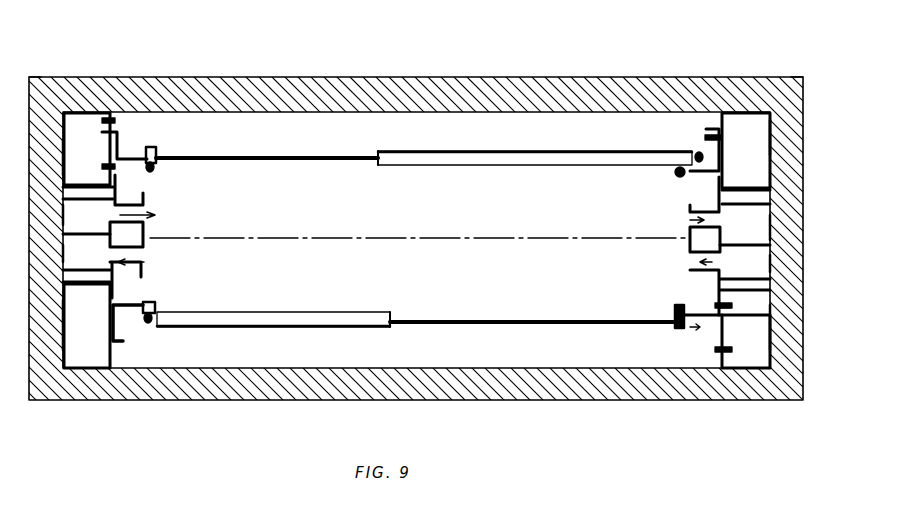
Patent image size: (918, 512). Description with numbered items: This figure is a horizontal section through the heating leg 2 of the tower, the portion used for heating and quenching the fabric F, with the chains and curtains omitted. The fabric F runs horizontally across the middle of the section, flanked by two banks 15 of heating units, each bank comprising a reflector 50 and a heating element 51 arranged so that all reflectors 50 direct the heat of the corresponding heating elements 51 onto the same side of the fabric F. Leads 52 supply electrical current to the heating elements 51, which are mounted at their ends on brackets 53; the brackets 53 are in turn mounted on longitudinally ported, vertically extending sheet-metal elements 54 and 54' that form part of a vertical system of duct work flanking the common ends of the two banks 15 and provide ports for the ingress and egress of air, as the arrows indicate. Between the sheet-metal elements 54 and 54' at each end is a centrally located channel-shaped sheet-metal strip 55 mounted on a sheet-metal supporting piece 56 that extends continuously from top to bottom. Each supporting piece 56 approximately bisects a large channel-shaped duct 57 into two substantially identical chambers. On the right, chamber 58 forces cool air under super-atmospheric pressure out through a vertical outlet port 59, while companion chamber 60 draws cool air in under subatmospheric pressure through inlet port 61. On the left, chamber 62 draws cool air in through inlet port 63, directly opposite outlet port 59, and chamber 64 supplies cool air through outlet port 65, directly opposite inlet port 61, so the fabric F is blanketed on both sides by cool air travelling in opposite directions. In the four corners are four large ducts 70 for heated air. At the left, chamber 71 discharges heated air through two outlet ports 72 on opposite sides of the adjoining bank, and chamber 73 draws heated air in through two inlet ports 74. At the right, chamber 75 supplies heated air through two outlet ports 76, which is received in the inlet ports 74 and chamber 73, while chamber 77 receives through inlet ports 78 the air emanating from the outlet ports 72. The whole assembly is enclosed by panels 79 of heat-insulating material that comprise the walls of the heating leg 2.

The heating leg 2 is at (30, 72).
The bank 15 is at (383, 150).
The reflector 50 is at (573, 151).
The heating element 51 is at (298, 155).
The lead 52 is at (150, 152).
The bracket 53 is at (150, 170).
The sheet metal element 54 is at (416, 240).
The sheet metal element 54' is at (414, 236).
The channel-shaped sheet-metal strip 55 is at (146, 246).
The sheet-metal supporting piece 56 is at (88, 238).
The duct 57 is at (63, 219).
The chamber 58 is at (772, 281).
The outlet port 59 is at (698, 263).
The chamber 60 is at (772, 205).
The inlet port 61 is at (690, 212).
The chamber 62 is at (68, 265).
The inlet port 63 is at (145, 263).
The chamber 64 is at (72, 191).
The outlet port 65 is at (156, 212).
The duct 70 is at (62, 157).
The chamber 71 is at (84, 356).
The outlet port 72 is at (130, 302).
The chamber 73 is at (68, 128).
The inlet port 74 is at (118, 126).
The chamber 75 is at (760, 168).
The outlet port 76 is at (709, 127).
The chamber 77 is at (774, 352).
The inlet port 78 is at (716, 306).
The panel 79 is at (398, 77).
The fabric F is at (398, 238).